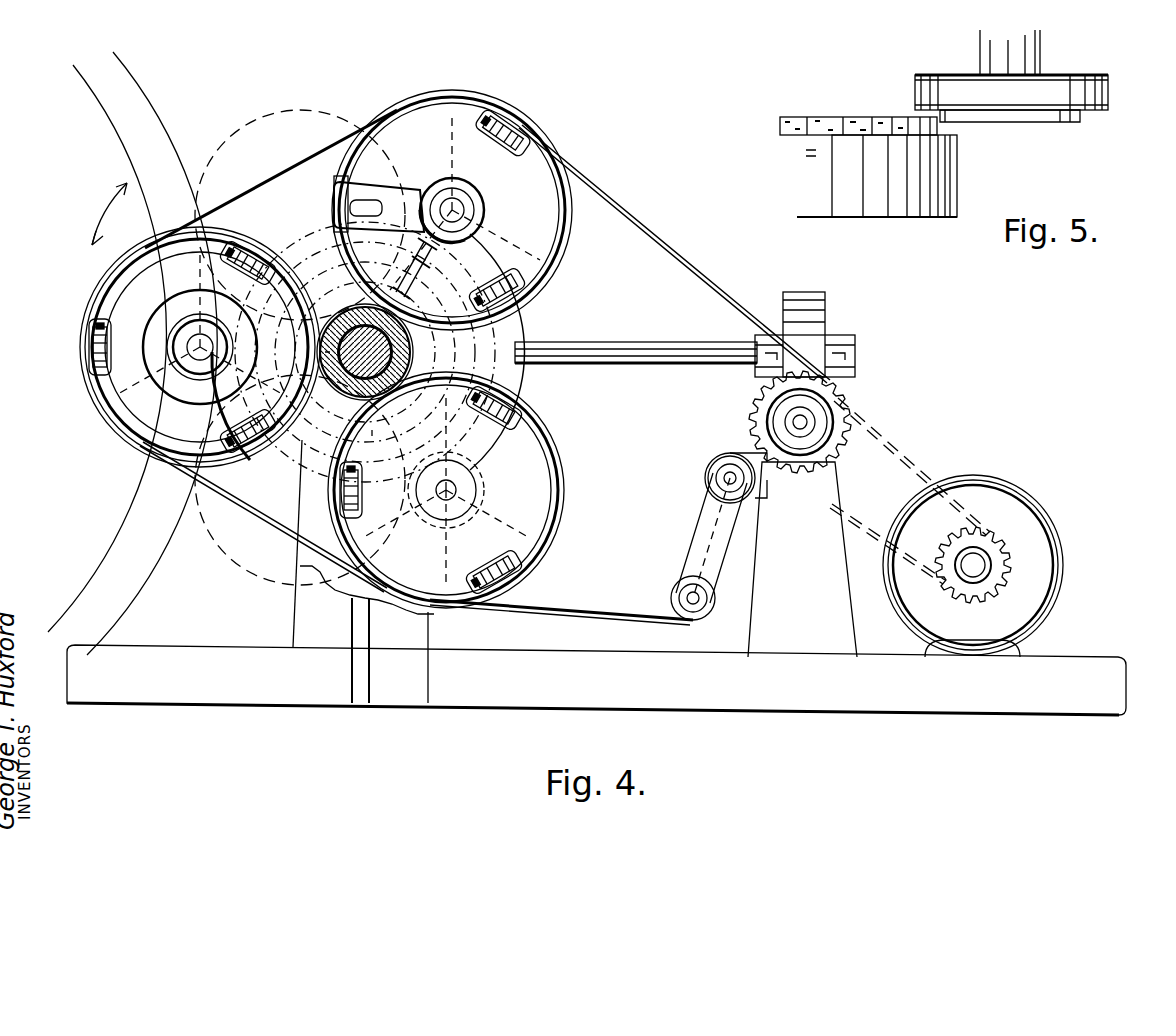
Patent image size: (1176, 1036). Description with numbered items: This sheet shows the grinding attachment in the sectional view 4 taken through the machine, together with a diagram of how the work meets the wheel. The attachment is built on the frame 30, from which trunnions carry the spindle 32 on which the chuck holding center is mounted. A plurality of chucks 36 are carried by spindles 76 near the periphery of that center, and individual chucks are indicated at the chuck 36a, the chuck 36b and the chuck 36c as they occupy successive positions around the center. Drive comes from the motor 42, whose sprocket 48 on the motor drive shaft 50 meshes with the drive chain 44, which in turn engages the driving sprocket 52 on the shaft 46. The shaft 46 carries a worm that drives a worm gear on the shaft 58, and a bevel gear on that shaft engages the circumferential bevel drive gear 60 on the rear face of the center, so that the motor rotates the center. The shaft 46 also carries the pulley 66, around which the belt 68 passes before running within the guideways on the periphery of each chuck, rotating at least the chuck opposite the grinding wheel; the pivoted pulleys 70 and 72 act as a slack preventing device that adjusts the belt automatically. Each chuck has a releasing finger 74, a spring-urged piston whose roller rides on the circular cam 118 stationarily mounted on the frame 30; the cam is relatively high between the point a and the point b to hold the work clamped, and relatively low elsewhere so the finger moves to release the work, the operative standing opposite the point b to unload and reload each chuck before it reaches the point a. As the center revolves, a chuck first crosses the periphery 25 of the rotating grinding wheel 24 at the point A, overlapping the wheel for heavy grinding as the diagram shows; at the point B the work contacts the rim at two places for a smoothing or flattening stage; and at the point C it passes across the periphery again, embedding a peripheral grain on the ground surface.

In FIG. 4, the periphery 25 is at (157, 114).
In FIG. 4, the point A is at (326, 110).
In FIG. 4, the point B is at (88, 300).
In FIG. 4, the point C is at (256, 591).
In FIG. 4, the chuck 36a is at (565, 492).
In FIG. 4, the winding spindle wheel b 36b is at (573, 141).
In FIG. 4, the winding spindle wheel c 36c is at (228, 240).
In FIG. 5, the chuck 36 is at (1086, 115).
In FIG. 5, the grinding wheel 24 is at (858, 117).
In FIG. 4, the spindle 32 is at (400, 351).
In FIG. 4, the point b is at (440, 355).
In FIG. 4, the point a is at (470, 428).
In FIG. 4, the shaft 58 is at (632, 344).
In FIG. 4, the driving sprocket 52 is at (857, 372).
In FIG. 4, the pulley 66 is at (766, 408).
In FIG. 4, the shaft 46 is at (792, 423).
In FIG. 4, the drive chain 44 is at (893, 434).
In FIG. 4, the pulley 70 is at (717, 463).
In FIG. 4, the pulley 72 is at (676, 590).
In FIG. 4, the belt 68 is at (527, 607).
In FIG. 4, the motor 42 is at (1050, 520).
In FIG. 4, the sprocket 48 is at (1002, 556).
In FIG. 4, the motor drive shaft 50 is at (985, 570).
In FIG. 4, the circular cam 118 is at (418, 408).
In FIG. 4, the spindle 76 is at (476, 490).
In FIG. 4, the spindle 4 is at (456, 496).
In FIG. 4, the circumferential bevel drive gear 60 is at (270, 476).
In FIG. 4, the releasing finger 74 is at (412, 282).
In FIG. 4, the frame 30 is at (1070, 657).